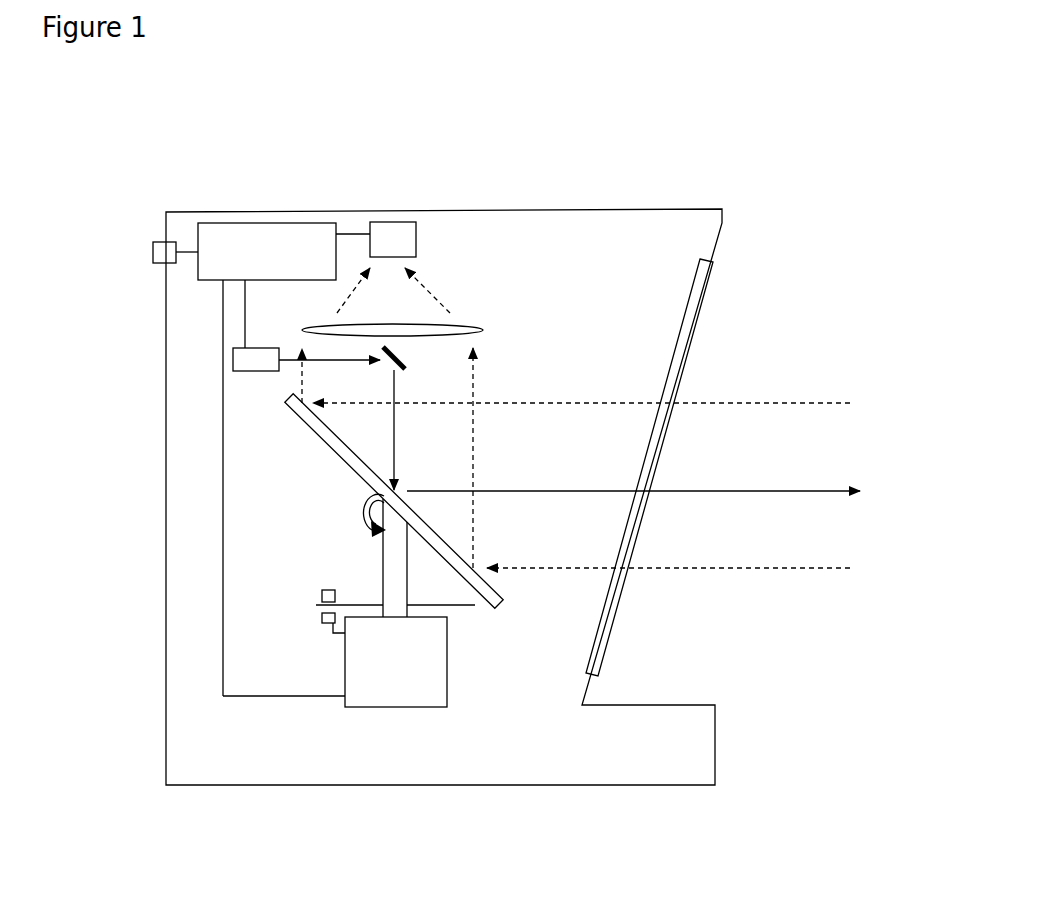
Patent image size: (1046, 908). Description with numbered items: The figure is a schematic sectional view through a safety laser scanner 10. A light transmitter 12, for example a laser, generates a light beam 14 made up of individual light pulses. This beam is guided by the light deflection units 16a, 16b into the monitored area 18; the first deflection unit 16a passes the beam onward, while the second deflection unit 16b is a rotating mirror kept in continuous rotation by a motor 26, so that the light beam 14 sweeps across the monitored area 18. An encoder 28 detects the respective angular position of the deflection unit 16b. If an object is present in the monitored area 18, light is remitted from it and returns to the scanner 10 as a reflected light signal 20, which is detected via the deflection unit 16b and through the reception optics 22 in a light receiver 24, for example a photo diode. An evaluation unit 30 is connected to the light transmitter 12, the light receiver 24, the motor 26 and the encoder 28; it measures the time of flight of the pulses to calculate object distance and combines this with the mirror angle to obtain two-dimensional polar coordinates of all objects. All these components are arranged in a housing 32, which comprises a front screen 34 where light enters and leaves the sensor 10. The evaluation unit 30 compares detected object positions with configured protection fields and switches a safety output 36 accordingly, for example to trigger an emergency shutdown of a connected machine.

The laser scanner 10 is at (682, 148).
The light transmitter 12 is at (245, 358).
The light beam 14 is at (735, 491).
The light deflection unit 16a is at (405, 357).
The light deflection unit 16b is at (358, 461).
The monitored area 18 is at (900, 308).
The reflected light signal 20 is at (790, 404).
The reception optics 22 is at (483, 327).
The light receiver 24 is at (403, 235).
The motor 26 is at (440, 695).
The encoder 28 is at (327, 604).
The evaluation unit 30 is at (243, 223).
The housing 32 is at (692, 750).
The front screen 34 is at (610, 639).
The safety output 36 is at (153, 252).